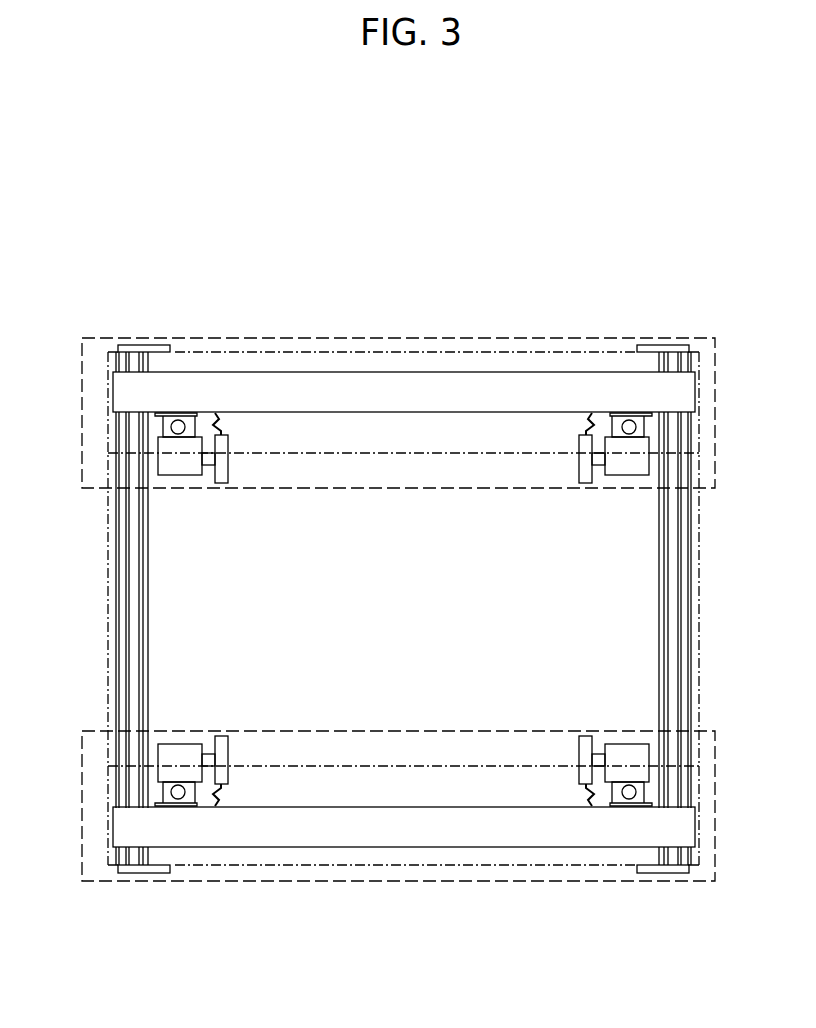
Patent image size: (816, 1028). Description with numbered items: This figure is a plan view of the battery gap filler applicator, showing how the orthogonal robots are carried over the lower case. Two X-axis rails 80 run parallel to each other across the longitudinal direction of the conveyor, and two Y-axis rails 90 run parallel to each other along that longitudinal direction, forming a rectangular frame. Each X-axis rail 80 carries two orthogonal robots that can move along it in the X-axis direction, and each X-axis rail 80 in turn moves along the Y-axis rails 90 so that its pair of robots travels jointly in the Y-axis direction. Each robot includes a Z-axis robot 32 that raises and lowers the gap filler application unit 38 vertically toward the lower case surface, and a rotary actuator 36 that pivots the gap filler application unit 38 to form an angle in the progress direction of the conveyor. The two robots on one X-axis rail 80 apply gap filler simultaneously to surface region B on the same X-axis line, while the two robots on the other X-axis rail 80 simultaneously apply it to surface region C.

The Z-axis robot 32 is at (207, 413).
The rotary actuator 36 is at (158, 471).
The gap filler application unit 38 is at (228, 440).
The X-axis rail 80 is at (404, 385).
The Y-axis rail 90 is at (125, 607).
The region B is at (715, 372).
The region C is at (715, 843).